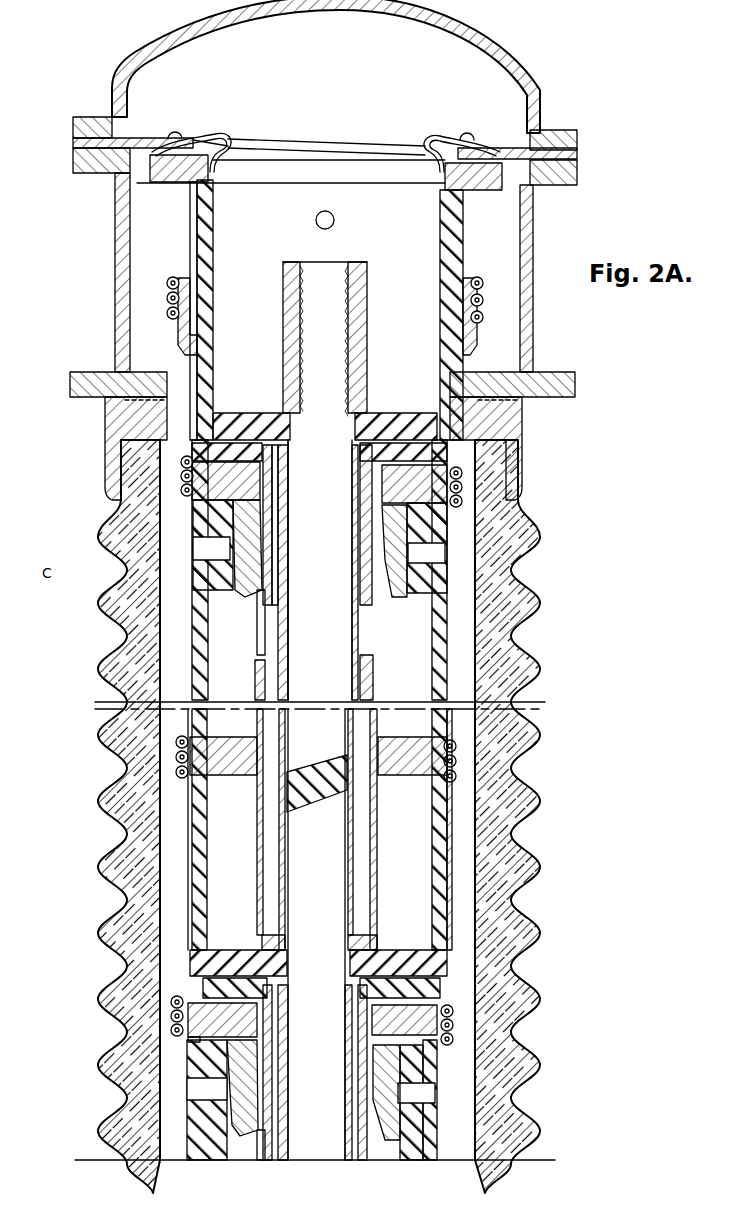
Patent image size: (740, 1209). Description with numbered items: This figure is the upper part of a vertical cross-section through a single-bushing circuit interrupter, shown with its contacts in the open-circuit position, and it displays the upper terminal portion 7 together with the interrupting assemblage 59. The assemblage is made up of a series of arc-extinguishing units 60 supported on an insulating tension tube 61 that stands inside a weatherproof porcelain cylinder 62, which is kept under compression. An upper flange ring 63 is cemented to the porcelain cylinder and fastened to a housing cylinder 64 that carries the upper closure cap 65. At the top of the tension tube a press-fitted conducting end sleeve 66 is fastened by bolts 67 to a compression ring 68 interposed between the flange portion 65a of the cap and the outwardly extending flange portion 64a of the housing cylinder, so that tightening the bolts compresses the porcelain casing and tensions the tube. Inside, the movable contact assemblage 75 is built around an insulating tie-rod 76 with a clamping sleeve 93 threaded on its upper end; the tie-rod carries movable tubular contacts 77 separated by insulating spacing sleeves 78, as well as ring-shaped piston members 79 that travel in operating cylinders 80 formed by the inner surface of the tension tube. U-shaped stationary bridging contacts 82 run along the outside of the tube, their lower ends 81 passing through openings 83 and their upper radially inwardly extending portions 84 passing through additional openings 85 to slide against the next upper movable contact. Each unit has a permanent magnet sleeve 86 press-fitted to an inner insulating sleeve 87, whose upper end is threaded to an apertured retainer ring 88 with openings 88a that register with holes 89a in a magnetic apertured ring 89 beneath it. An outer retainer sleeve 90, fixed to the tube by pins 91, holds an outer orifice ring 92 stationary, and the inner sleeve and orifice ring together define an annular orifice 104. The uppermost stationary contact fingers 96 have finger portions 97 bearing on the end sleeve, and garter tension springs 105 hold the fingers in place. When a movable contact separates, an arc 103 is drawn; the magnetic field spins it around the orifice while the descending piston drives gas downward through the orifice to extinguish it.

The upper terminal portion 7 is at (316, 220).
The interrupting assemblage 59 is at (327, 931).
The arc-extinguishing unit 60 is at (320, 800).
The insulating tension tube 61 is at (447, 642).
The porcelain cylinder 62 is at (540, 883).
The upper flange ring 63 is at (70, 408).
The housing cylinder 64 is at (115, 268).
The outwardly extending flange portion 64a is at (578, 177).
The upper closure cap 65 is at (541, 104).
The flange portion of closure cap 65a is at (578, 142).
The conducting end sleeve 66 is at (463, 245).
The bolts 67 is at (178, 138).
The compression ring 68 is at (140, 142).
The movable contact assemblage 75 is at (307, 570).
The insulating tie-rod 76 is at (333, 264).
The movable tubular contact 77 is at (377, 845).
The insulating spacing sleeve 78 is at (353, 876).
The ring-shaped piston member 79 is at (384, 415).
The operating cylinder 80 is at (213, 340).
The lower end of bridging contact 81 is at (313, 1090).
The U-shaped stationary bridging contact 82 is at (207, 888).
The openings 83 is at (312, 1034).
The upper radially inwardly extending portion 84 is at (232, 775).
The additional openings 85 is at (222, 737).
The permanent magnet sleeve 86 is at (272, 470).
The inner insulating sleeve 87 is at (290, 563).
The apertured retainer ring 88 is at (188, 1012).
The openings in retainer ring 88a is at (262, 950).
The magnetic apertured ring 89 is at (360, 480).
The holes in magnetic ring 89a is at (378, 950).
The outer retainer sleeve 90 is at (224, 590).
The pins 91 is at (196, 549).
The outer orifice ring 92 is at (240, 595).
The clamping sleeve 93 is at (367, 323).
The uppermost stationary contact fingers 96 is at (200, 497).
The finger portions 97 is at (178, 340).
The arc 103 is at (257, 650).
The annular orifice 104 is at (385, 588).
The garter tension springs 105 is at (483, 300).